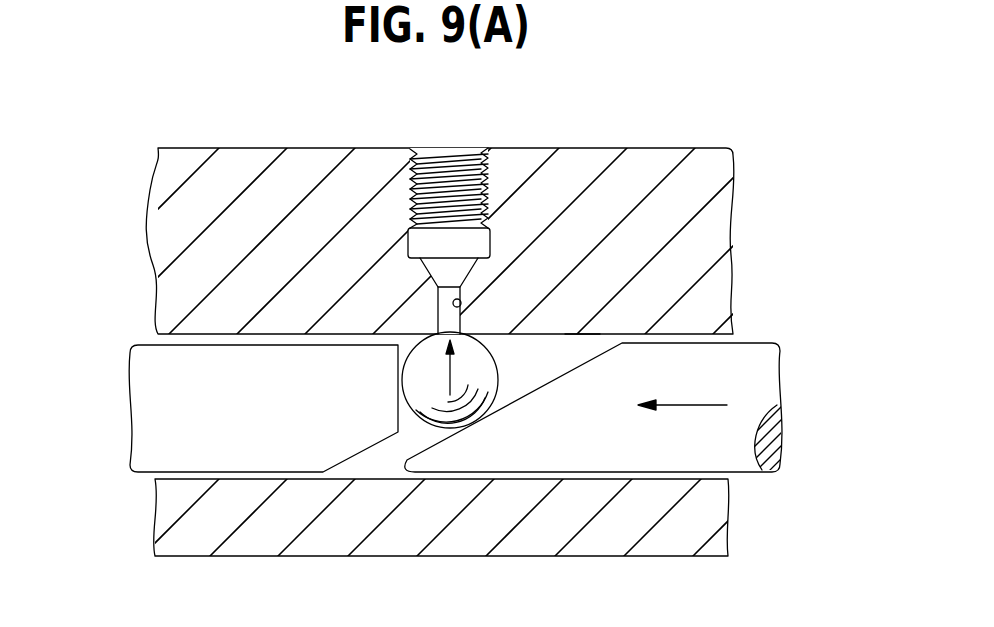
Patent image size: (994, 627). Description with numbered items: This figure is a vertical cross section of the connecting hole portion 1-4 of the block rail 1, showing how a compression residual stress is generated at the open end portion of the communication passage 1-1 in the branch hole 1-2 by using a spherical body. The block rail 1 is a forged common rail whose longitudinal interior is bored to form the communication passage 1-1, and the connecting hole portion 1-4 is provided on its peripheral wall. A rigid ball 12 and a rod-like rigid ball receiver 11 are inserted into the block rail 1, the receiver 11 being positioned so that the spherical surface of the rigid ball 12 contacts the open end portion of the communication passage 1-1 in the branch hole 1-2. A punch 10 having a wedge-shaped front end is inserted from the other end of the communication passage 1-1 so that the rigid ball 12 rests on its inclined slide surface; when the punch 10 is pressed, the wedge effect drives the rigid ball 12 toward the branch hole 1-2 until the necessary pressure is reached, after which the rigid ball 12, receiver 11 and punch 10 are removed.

The block rail 1 is at (708, 243).
The communication passage 1-1 is at (590, 336).
The branch hole 1-2 is at (462, 304).
The connecting hole portion 1-4 is at (455, 163).
The punch 10 is at (750, 343).
The rigid ball receiver 11 is at (150, 403).
The rigid ball 12 is at (495, 358).